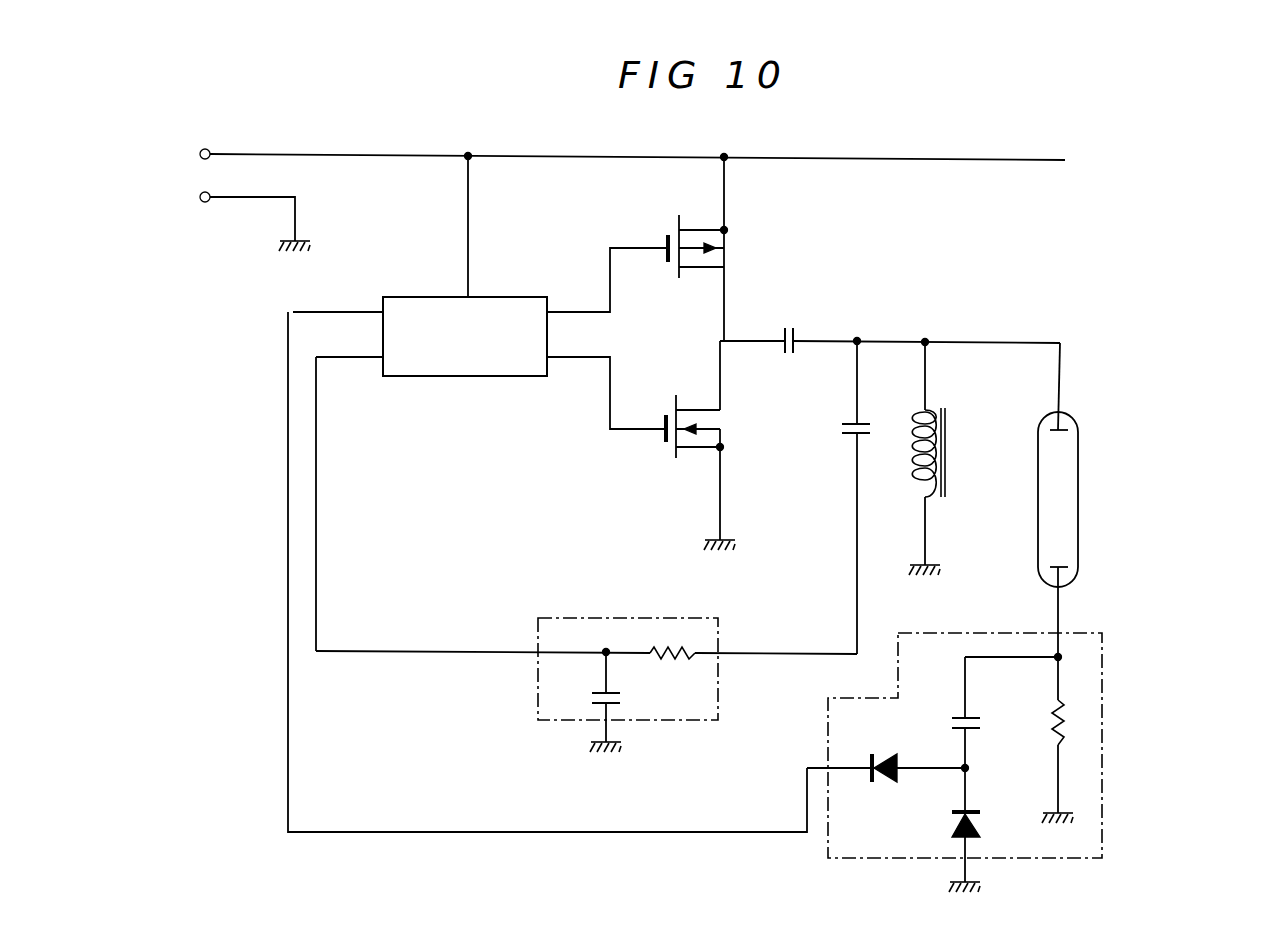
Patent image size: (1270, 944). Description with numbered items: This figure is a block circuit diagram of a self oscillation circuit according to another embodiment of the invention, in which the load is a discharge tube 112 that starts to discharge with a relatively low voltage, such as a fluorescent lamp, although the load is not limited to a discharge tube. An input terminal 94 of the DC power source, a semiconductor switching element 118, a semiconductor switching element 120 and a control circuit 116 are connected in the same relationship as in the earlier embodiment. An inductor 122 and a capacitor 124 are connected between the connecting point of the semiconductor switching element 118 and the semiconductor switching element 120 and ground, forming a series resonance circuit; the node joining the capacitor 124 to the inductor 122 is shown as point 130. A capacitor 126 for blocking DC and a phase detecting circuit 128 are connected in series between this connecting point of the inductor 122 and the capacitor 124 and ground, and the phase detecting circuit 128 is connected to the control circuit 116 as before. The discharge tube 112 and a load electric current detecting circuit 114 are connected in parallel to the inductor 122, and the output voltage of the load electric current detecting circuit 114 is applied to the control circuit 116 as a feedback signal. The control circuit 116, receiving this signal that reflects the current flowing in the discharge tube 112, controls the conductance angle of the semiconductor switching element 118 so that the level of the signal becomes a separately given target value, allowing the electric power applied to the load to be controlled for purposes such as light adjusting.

The input terminal 94 is at (208, 150).
The control circuit 116 is at (414, 296).
The semiconductor switching element 118 is at (668, 232).
The semiconductor switching element 120 is at (672, 446).
The capacitor 124 is at (790, 326).
The output node 130 is at (860, 338).
The capacitor for blocking DC 126 is at (842, 428).
The inductor 122 is at (930, 412).
The discharge tube 112 is at (1078, 432).
The load electric current detecting circuit 114 is at (1102, 652).
The phase detecting circuit 128 is at (548, 618).